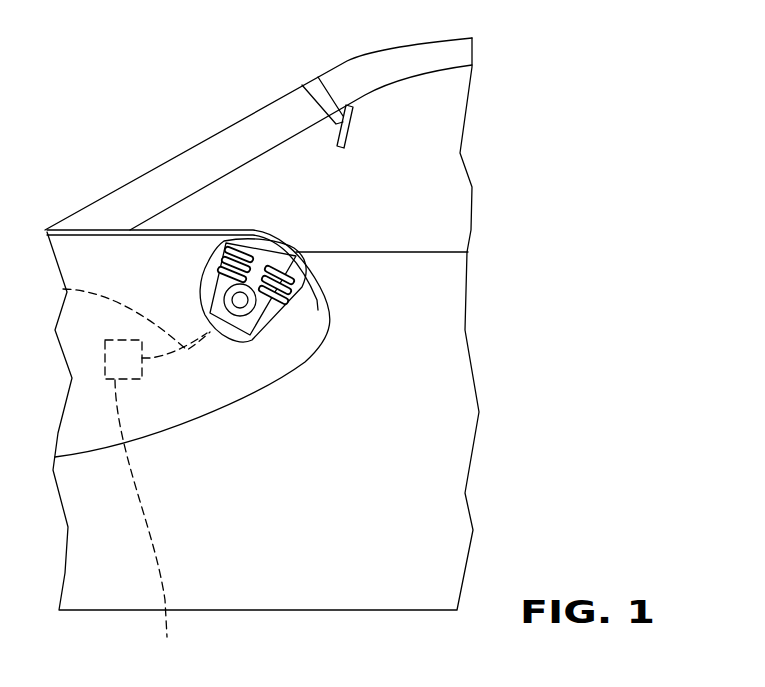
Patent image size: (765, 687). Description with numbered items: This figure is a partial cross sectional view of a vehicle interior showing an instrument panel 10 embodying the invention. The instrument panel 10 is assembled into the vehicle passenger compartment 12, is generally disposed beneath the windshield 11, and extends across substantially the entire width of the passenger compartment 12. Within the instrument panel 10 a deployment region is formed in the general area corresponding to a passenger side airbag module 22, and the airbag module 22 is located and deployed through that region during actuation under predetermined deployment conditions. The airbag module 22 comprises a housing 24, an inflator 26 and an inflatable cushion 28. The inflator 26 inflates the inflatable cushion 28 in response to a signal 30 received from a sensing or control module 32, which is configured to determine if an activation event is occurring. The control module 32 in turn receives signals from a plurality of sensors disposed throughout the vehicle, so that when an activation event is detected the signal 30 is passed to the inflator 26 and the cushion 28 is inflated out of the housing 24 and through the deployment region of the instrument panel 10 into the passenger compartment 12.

The instrument panel 10 is at (189, 265).
The windshield 11 is at (268, 103).
The vehicle passenger compartment 12 is at (428, 437).
The passenger side airbag module 22 is at (287, 308).
The housing 24 is at (202, 290).
The inflator 26 is at (250, 334).
The inflatable cushion 28 is at (223, 243).
The signal 30 is at (63, 289).
The sensing or control module 32 is at (146, 524).